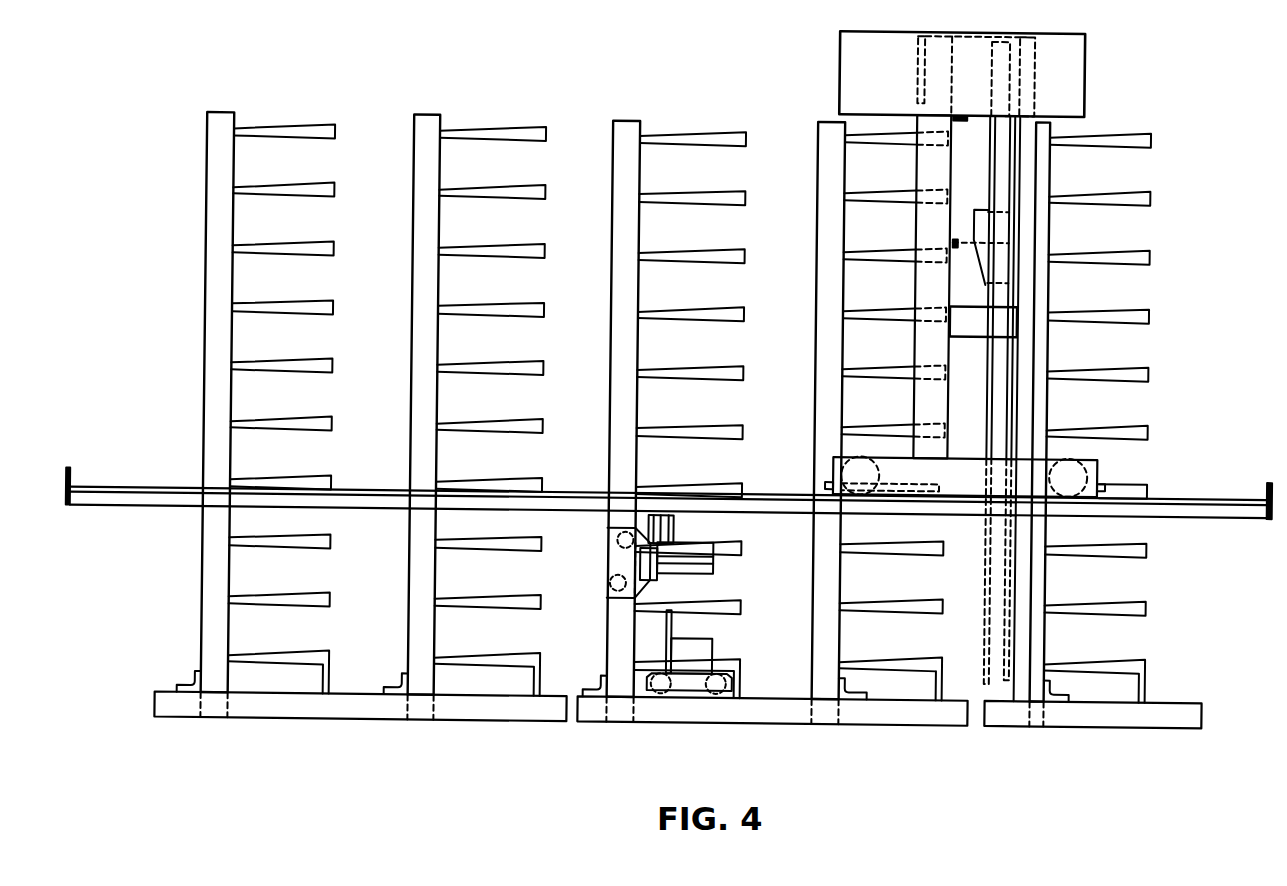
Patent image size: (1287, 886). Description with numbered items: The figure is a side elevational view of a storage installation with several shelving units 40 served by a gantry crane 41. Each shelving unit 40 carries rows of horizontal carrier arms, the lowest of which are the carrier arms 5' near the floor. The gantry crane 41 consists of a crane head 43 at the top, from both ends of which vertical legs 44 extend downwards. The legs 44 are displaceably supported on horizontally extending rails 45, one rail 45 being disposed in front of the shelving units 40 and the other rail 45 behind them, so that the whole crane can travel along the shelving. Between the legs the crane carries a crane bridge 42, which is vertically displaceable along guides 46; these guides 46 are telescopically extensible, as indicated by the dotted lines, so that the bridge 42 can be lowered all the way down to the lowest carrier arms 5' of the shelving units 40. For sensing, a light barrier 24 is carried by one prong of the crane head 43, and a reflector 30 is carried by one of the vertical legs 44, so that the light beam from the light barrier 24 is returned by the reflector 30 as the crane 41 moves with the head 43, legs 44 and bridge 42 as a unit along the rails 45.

The shelving unit 40 is at (216, 222).
The carrier arm 5' is at (689, 412).
The rail 45 is at (166, 502).
The gantry crane 41 is at (984, 362).
The crane head 43 is at (868, 44).
The vertical leg 44 is at (923, 226).
The reflector 30 is at (955, 116).
The crane bridge 42 is at (998, 225).
The guide 46 is at (997, 411).
The light barrier 24 is at (953, 244).